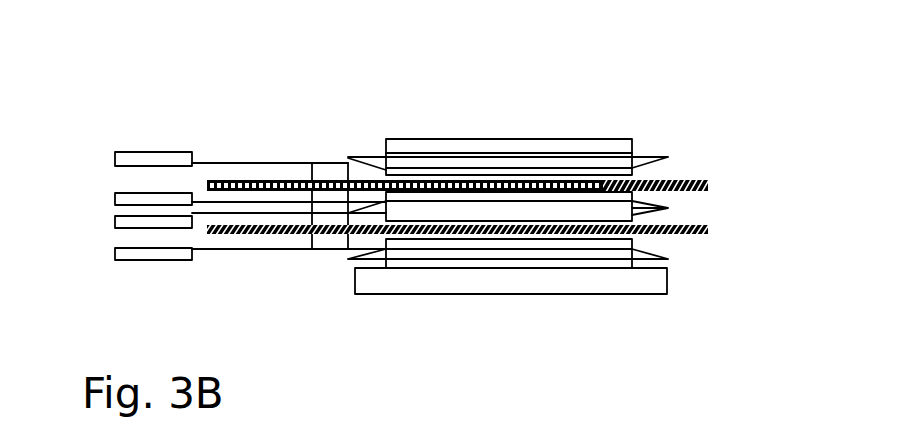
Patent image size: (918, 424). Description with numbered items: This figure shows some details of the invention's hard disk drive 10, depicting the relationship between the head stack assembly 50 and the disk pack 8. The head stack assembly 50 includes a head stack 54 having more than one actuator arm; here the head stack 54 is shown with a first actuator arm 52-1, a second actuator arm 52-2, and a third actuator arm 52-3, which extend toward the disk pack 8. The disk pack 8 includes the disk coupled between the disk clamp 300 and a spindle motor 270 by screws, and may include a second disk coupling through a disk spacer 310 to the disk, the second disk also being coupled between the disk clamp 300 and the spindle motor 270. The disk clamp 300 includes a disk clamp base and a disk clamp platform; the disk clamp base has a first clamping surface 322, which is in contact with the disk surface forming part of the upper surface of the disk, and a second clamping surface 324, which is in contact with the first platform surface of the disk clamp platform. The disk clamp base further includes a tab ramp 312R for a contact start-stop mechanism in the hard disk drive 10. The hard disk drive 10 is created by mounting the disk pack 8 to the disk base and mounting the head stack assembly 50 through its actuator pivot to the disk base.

The hard disk drive 10 is at (730, 63).
The head stack assembly 50 is at (367, 100).
The first actuator arm 52-1 is at (193, 156).
The second actuator arm 52-2 is at (110, 193).
The third actuator arm 52-3 is at (212, 256).
The head stack 54 is at (197, 281).
The disk pack 8 is at (707, 328).
The tab ramp 312R is at (377, 150).
The second clamping surface 324 is at (610, 139).
The first clamping surface 322 is at (707, 155).
The disk clamp 300 is at (778, 123).
The disk spacer 310 is at (717, 190).
The spindle motor 270 is at (490, 294).